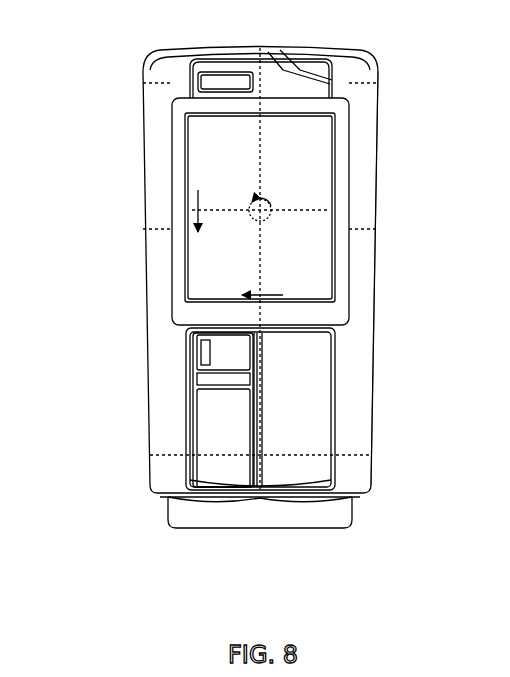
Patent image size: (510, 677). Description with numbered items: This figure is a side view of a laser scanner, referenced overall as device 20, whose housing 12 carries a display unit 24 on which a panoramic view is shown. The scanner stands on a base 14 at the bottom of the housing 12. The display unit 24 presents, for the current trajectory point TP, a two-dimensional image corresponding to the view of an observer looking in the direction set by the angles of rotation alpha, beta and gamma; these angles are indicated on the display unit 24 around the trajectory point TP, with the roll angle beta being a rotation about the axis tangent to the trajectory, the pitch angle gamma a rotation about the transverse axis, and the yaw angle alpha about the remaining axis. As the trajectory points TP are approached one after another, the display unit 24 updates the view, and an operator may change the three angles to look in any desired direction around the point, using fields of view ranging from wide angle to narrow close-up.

The electronic device 20 is at (118, 76).
The housing 12 is at (382, 368).
The display unit 24 is at (323, 150).
The trajectory point TP is at (262, 210).
The base 14 is at (243, 545).